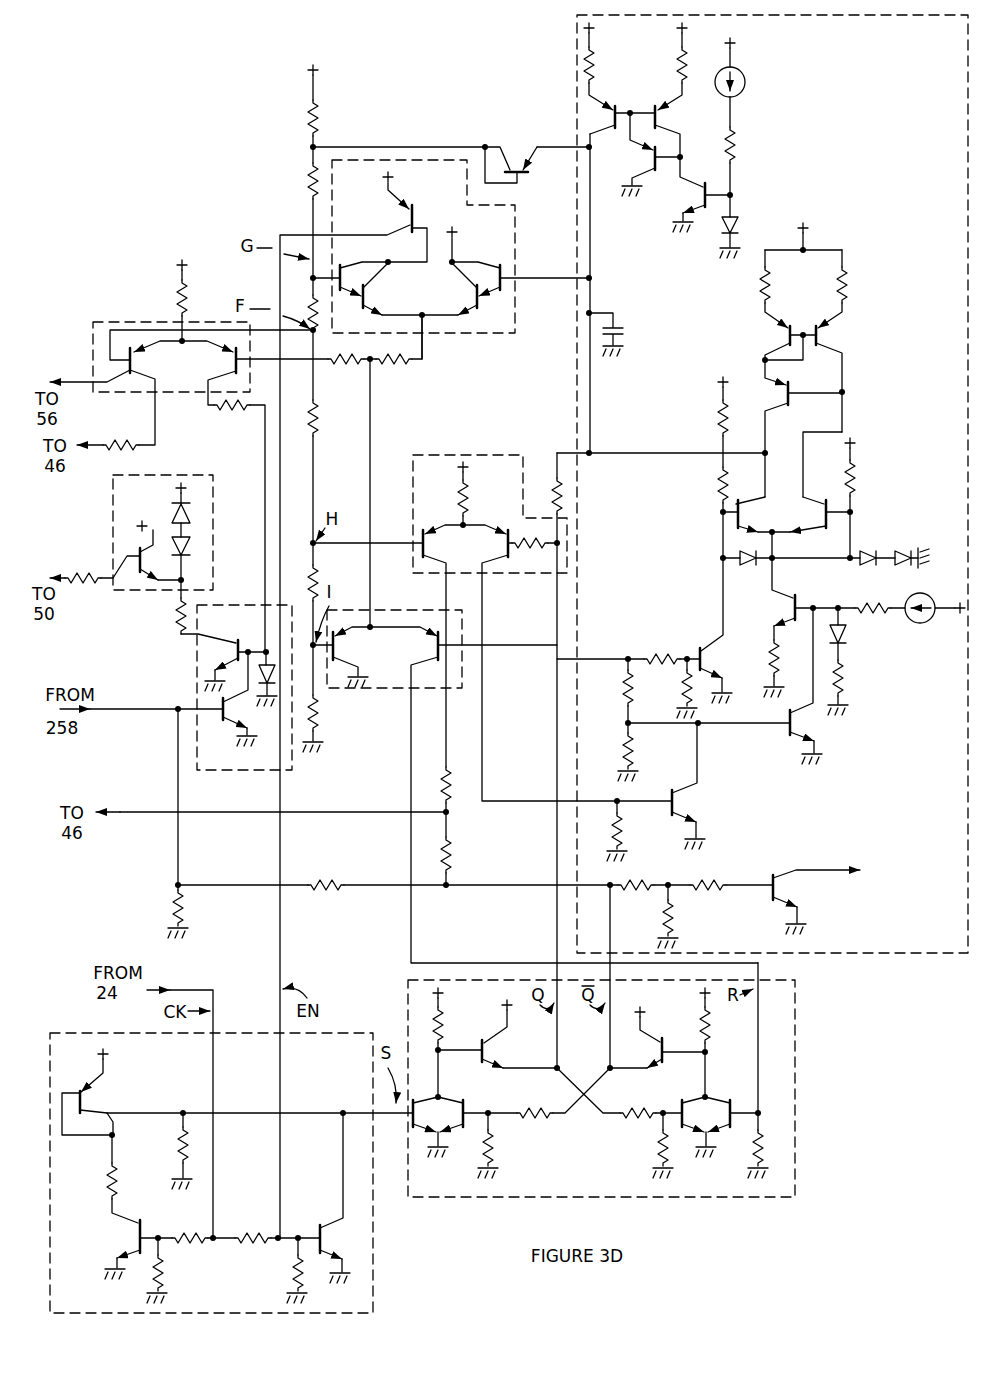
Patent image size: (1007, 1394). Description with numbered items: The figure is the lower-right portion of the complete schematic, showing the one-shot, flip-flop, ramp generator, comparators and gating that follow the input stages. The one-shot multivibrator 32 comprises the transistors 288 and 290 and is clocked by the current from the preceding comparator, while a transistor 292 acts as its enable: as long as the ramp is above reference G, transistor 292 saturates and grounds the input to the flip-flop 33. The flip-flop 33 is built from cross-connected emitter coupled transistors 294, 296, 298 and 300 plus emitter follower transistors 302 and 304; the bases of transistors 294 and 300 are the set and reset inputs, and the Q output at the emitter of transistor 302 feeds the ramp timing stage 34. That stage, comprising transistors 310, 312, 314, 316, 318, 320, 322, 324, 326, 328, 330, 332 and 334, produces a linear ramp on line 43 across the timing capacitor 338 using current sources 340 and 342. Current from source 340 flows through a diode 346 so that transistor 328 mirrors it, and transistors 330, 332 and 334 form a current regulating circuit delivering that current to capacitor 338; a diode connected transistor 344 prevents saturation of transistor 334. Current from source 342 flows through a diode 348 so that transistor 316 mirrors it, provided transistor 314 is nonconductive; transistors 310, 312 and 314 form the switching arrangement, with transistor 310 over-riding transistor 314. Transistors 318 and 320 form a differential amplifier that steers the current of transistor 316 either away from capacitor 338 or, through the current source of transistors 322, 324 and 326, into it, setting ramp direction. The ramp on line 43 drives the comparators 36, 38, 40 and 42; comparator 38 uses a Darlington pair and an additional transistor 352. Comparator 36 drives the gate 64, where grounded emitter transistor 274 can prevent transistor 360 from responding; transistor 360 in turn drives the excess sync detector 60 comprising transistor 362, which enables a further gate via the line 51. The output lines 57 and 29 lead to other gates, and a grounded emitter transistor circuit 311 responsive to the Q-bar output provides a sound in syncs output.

The output line to 46 29 is at (118, 808).
The one-shot multivibrator 32 is at (378, 1258).
The flip-flop 33 is at (800, 1160).
The ramp timing stage 34 is at (857, 957).
The comparator 36 is at (165, 396).
The comparator 38 is at (506, 343).
The comparator 40 is at (413, 492).
The comparator 42 is at (385, 606).
The line 43 is at (600, 395).
The line 51 is at (66, 572).
The output line to 56 57 is at (80, 366).
The excess sync detector 60 is at (178, 468).
The gate 64 is at (225, 598).
The grounded emitter transistor 274 is at (230, 738).
The transistor 288 is at (110, 1098).
The transistor 290 is at (110, 1223).
The transistor 292 is at (322, 1212).
The emitter coupled transistor 294 is at (428, 1090).
The emitter coupled transistor 296 is at (455, 1160).
The emitter coupled transistor 298 is at (692, 1089).
The emitter coupled transistor 300 is at (722, 1090).
The emitter follower transistor 302 is at (503, 1055).
The emitter follower transistor 304 is at (658, 1033).
The grounded emitter transistor 310 is at (703, 813).
The grounded emitter transistor circuit 311 is at (758, 856).
The grounded emitter transistor 312 is at (709, 636).
The grounded emitter transistor 314 is at (828, 738).
The transistor 316 is at (790, 590).
The transistor 318 is at (857, 504).
The transistor 320 is at (718, 505).
The current source transistor 322 is at (795, 390).
The current source transistor 324 is at (840, 341).
The current source transistor 326 is at (766, 342).
The transistor 328 is at (683, 188).
The transistor 330 is at (626, 178).
The transistor 332 is at (676, 100).
The transistor 334 is at (604, 90).
The timing capacitor 338 is at (622, 322).
The current source 340 is at (752, 97).
The current source 342 is at (926, 627).
The diode connected transistor 344 is at (512, 145).
The diode 346 is at (745, 218).
The diode 348 is at (863, 635).
The transistor 352 is at (398, 198).
The transistor 360 is at (250, 632).
The transistor 362 is at (141, 538).